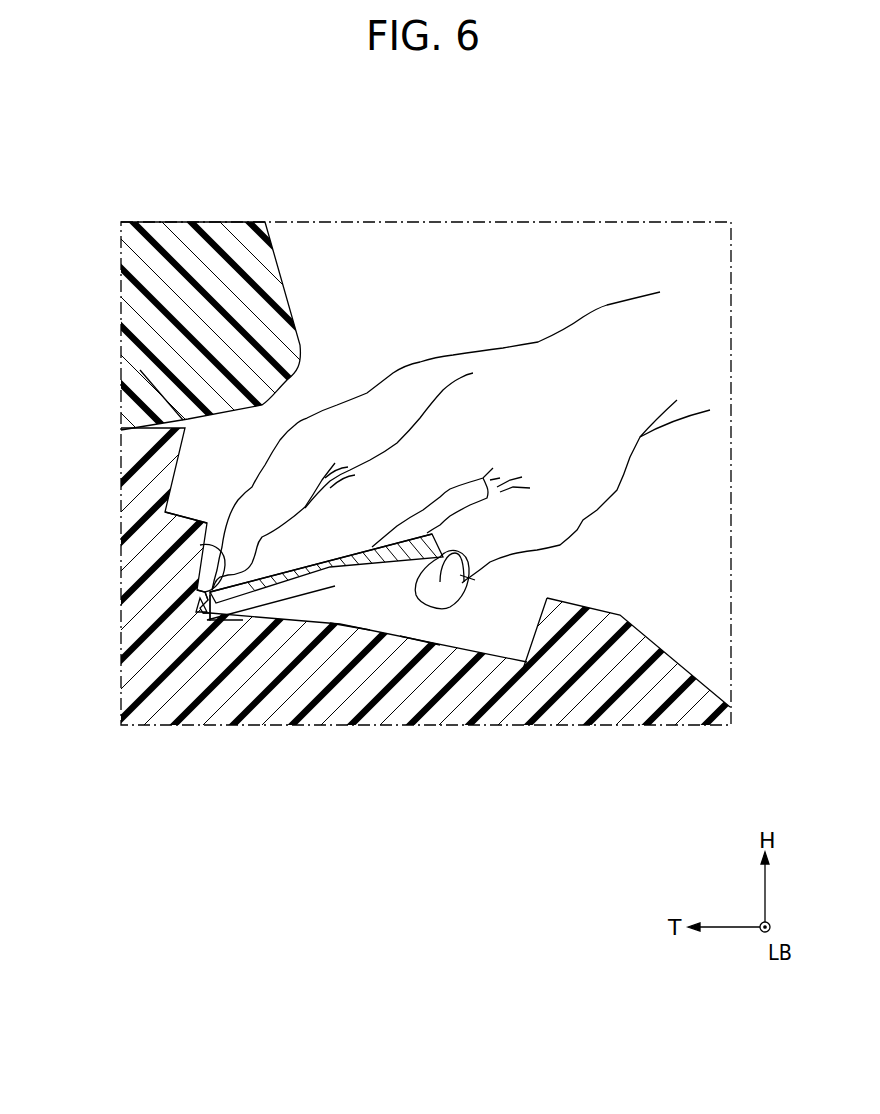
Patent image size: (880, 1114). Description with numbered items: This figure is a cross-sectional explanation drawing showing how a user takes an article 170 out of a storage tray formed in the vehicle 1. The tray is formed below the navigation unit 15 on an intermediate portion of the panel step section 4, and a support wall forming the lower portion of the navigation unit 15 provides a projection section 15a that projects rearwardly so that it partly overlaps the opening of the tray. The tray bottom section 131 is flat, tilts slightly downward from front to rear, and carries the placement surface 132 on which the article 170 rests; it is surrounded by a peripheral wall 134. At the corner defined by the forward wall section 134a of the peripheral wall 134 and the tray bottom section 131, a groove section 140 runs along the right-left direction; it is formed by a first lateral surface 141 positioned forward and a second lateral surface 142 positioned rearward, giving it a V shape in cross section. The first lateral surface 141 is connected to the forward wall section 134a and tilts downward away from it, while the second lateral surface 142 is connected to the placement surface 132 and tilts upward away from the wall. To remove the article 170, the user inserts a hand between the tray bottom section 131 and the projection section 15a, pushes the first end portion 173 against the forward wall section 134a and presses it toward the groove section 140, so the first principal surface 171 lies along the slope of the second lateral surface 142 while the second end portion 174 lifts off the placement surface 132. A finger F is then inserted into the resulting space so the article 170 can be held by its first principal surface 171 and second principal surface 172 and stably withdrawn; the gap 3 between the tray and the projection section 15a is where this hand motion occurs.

The vehicle 1 is at (158, 223).
The gap 3 is at (296, 298).
The panel step section 4 is at (600, 612).
The navigation unit 15 is at (285, 263).
The projection section 15a is at (140, 370).
The finger F is at (333, 430).
The tray bottom section 131 is at (357, 626).
The placement surface 132 is at (432, 643).
The peripheral wall 134 is at (533, 667).
The forward wall section 134a is at (200, 545).
The groove section 140 is at (198, 592).
The first lateral surface 141 is at (200, 607).
The second lateral surface 142 is at (248, 618).
The article 170 is at (318, 586).
The first principal surface 171 is at (305, 508).
The second principal surface 172 is at (305, 508).
The first end portion 173 is at (205, 605).
The second end portion 174 is at (467, 578).